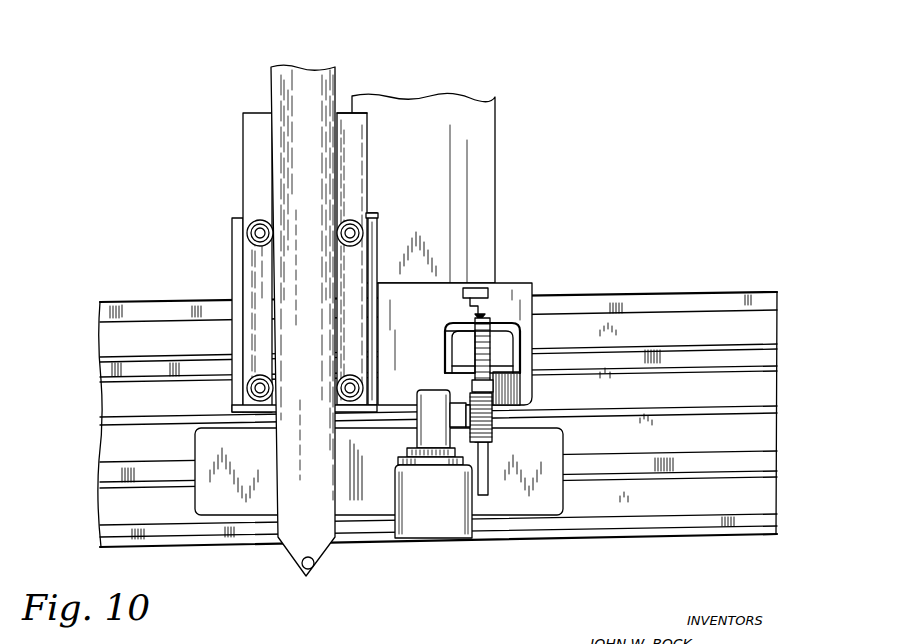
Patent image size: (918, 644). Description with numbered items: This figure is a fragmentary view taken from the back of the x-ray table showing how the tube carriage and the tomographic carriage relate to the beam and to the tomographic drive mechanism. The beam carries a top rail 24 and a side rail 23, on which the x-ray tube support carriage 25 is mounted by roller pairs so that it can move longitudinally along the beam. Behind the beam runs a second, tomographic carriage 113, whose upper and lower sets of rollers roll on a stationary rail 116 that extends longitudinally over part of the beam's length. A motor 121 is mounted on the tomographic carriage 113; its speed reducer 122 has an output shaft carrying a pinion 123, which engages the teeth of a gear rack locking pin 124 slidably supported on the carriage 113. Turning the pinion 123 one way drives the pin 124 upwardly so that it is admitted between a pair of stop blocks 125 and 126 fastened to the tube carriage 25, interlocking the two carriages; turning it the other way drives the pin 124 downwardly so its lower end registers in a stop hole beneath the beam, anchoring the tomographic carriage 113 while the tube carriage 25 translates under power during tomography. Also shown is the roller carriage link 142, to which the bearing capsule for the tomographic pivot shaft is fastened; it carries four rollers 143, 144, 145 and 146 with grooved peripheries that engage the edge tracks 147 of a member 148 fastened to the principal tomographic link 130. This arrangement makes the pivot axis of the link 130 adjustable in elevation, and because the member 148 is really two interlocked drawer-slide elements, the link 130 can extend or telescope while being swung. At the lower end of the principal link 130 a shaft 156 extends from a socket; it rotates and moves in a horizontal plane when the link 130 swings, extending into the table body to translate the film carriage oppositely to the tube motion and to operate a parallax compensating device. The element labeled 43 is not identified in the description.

The top rail 24 is at (700, 303).
The side rail 23 is at (767, 355).
The stationary rail 116 is at (753, 463).
The tomographic carriage 113 is at (370, 497).
The carriage block 43 is at (462, 102).
The edge tracks 147 is at (362, 148).
The roller carriage link 142 is at (377, 225).
The roller 143 is at (350, 220).
The roller 145 is at (252, 237).
The roller 146 is at (252, 392).
The roller 144 is at (337, 408).
The x-ray tube support carriage 25 is at (522, 284).
The gear rack locking pin 124 is at (478, 357).
The stop block 126 is at (508, 355).
The stop block 125 is at (455, 353).
The speed reducer 122 is at (432, 425).
The pinion 123 is at (492, 430).
The motor 121 is at (437, 513).
The principal tomographic link 130 is at (308, 75).
The shaft 156 is at (299, 571).
The member 148 is at (346, 121).